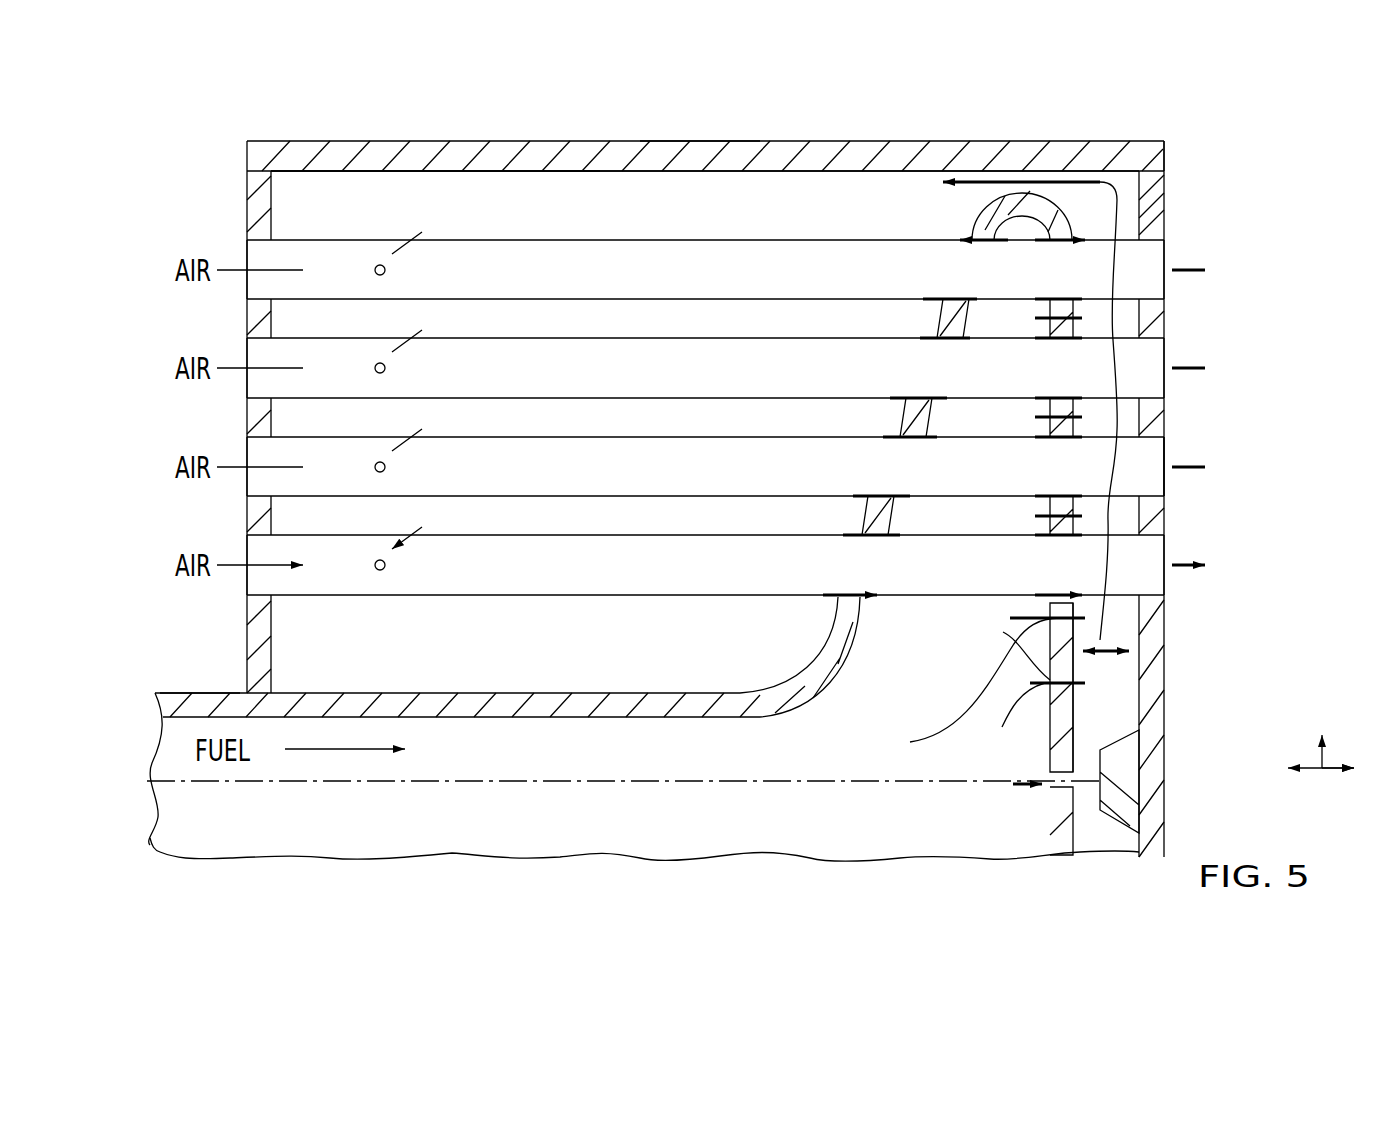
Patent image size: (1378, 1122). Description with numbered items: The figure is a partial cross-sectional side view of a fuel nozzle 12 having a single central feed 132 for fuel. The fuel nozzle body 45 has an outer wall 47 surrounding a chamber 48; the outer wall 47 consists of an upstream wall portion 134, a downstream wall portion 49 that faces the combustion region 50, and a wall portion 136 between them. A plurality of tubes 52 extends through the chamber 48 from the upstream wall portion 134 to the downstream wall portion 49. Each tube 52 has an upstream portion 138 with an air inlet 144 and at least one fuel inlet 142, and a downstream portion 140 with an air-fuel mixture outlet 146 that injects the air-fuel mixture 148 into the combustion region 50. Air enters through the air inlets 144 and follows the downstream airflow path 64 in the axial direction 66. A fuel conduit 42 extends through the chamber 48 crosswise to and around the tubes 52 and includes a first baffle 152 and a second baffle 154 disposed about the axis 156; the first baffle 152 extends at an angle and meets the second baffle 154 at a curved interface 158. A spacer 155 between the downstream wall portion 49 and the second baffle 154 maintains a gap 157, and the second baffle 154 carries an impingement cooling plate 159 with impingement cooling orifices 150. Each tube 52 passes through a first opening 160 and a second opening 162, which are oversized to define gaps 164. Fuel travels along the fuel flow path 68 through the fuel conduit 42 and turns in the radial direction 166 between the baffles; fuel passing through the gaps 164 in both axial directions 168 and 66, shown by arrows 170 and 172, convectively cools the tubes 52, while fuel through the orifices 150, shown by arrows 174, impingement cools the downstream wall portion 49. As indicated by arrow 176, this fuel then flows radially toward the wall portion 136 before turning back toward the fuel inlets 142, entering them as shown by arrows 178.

The fuel nozzle 12 is at (1260, 139).
The fuel conduit 42 is at (513, 728).
The fuel nozzle body 45 is at (673, 141).
The outer wall 47 is at (728, 141).
The chamber 48 is at (575, 188).
The downstream wall portion 49 is at (1157, 224).
The combustion region 50 is at (1252, 466).
The tubes 52 is at (637, 348).
The downstream airflow path 64 is at (246, 567).
The axial direction 66 is at (1338, 772).
The fuel flow path 68 is at (340, 745).
The single central feed 132 is at (228, 712).
The upstream wall portion 134 is at (250, 206).
The wall portion 136 is at (853, 141).
The upstream portion 138 is at (340, 262).
The downstream portion 140 is at (1163, 183).
The fuel inlet 142 is at (422, 582).
The air inlet 144 is at (255, 551).
The air-fuel mixture outlet 146 is at (1157, 558).
The air-fuel mixture 148 is at (1187, 568).
The impingement cooling orifices 150 is at (1045, 772).
The first baffle 152 is at (675, 692).
The second baffle 154 is at (1075, 663).
The spacer 155 is at (1125, 823).
The axis 156 is at (620, 782).
The gap 157 is at (1140, 640).
The interface 158 is at (1018, 215).
The impingement cooling plate 159 is at (1075, 726).
The first opening 160 is at (940, 297).
The second opening 162 is at (1050, 297).
The gap 164 is at (913, 410).
The radial direction 166 is at (1315, 752).
The axial direction 168 is at (1310, 772).
The arrows 170 is at (955, 297).
The arrows 172 is at (1068, 257).
The arrows 174 is at (1030, 788).
The arrow 176 is at (1127, 258).
The arrows 178 is at (418, 535).